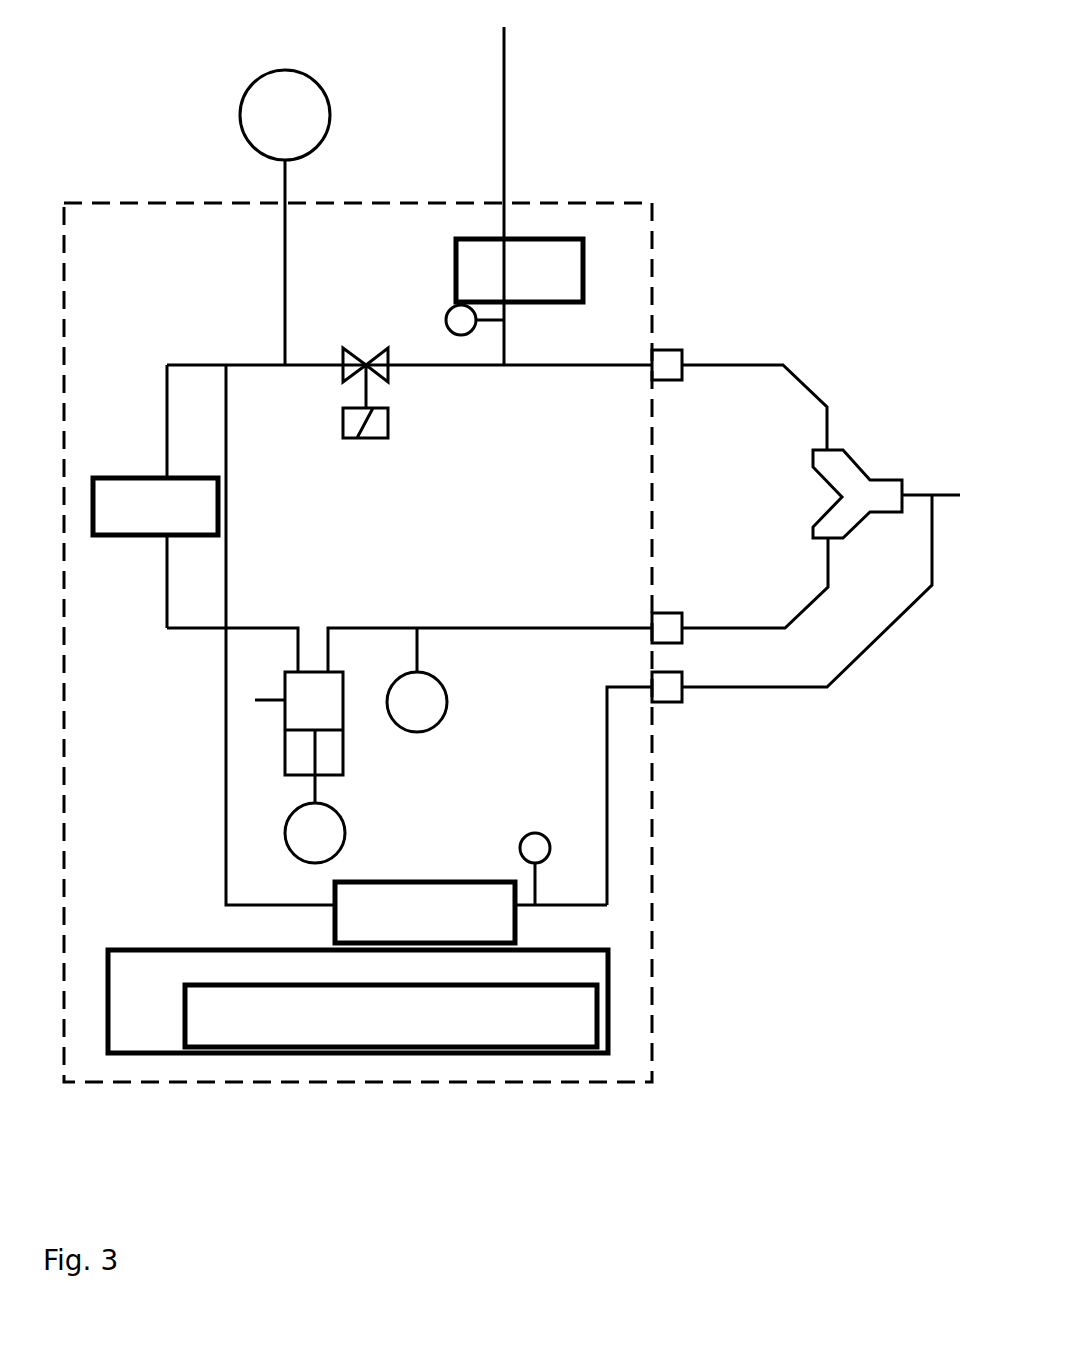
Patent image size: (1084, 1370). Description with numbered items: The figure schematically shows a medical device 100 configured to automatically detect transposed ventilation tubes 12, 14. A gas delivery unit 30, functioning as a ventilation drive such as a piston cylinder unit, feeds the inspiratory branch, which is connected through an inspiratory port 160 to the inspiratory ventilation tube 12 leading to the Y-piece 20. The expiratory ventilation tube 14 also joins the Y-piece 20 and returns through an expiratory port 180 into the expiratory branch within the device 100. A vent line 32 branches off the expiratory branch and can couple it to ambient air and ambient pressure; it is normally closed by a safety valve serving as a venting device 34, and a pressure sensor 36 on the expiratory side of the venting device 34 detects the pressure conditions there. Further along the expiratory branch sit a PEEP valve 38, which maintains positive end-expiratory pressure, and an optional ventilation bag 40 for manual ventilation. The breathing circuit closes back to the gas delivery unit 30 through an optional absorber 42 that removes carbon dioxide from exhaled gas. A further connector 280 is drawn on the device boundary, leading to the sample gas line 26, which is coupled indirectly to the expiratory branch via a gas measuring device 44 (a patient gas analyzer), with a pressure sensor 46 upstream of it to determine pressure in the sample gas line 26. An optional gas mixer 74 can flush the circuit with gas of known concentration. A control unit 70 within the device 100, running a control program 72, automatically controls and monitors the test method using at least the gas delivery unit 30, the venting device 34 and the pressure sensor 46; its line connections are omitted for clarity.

The medical device 100 is at (652, 820).
The expiratory ventilation tube 14 is at (783, 365).
The inspiratory ventilation tube 12 is at (710, 628).
The sample gas line 26 is at (795, 687).
The Y-piece 20 is at (857, 463).
The expiratory port 180 is at (668, 350).
The inspiratory port 160 is at (668, 613).
The third connector 280 is at (668, 702).
The ventilation bag 40 is at (240, 102).
The vent line 32 is at (504, 100).
The venting device 34 is at (473, 239).
The pressure sensor 36 is at (453, 305).
The PEEP valve 38 is at (380, 375).
The absorber 42 is at (148, 535).
The gas delivery unit 30 is at (343, 750).
The gas mixer 74 is at (447, 687).
The pressure sensor 46 is at (533, 833).
The gas measuring device 44 is at (473, 882).
The control unit 70 is at (358, 1001).
The control program 72 is at (391, 1016).